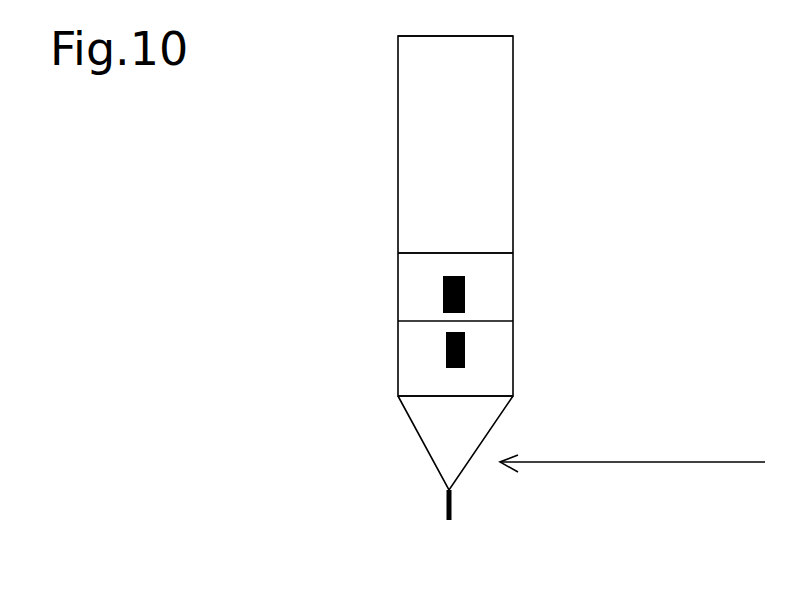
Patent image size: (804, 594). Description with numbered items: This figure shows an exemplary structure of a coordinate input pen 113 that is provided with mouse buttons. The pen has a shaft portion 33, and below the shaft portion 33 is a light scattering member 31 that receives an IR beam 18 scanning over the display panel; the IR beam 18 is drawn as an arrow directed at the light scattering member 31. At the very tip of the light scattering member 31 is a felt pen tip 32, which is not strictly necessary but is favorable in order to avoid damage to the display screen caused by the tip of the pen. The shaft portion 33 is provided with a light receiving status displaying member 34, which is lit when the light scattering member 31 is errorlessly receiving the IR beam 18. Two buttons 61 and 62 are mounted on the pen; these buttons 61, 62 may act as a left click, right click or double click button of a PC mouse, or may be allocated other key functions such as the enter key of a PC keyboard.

The coordinate input pen 113 is at (362, 154).
The shaft portion 33 is at (513, 153).
The light receiving status displaying member 34 is at (513, 283).
The button 61 is at (443, 292).
The button 62 is at (446, 351).
The light scattering member 31 is at (422, 445).
The felt pen tip 32 is at (452, 510).
The IR beam 18 is at (630, 462).